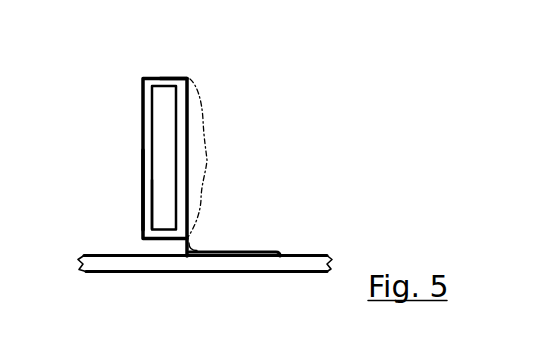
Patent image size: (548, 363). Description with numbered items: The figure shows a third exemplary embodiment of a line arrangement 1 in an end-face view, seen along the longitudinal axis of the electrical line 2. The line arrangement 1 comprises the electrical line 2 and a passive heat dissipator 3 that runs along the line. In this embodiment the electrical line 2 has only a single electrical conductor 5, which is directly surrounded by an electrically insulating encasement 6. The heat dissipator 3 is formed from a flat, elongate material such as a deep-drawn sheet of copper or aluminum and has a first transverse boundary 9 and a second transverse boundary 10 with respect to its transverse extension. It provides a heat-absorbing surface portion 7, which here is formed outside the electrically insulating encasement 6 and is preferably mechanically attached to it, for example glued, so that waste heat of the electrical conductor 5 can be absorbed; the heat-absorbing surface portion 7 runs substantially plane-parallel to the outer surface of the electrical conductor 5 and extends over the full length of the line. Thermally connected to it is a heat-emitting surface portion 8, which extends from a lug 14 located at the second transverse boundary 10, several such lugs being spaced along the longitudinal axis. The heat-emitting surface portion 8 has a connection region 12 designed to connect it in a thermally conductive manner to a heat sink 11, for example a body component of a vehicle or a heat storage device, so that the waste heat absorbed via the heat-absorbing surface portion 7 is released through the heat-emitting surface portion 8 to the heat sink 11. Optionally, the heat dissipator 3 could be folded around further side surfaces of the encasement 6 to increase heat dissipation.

The line arrangement 1 is at (287, 134).
The electrical line 2 is at (142, 77).
The passive heat dissipator 3 is at (176, 170).
The electrical conductor 5 is at (157, 216).
The electrically insulating encasement 6 is at (142, 190).
The heat-absorbing surface portion 7 is at (209, 158).
The heat-emitting surface portion 8 is at (170, 273).
The first transverse boundary 9 is at (185, 77).
The second transverse boundary 10 is at (278, 252).
The heat sink 11 is at (107, 272).
The connection region 12 is at (246, 249).
The lug 14 is at (214, 251).